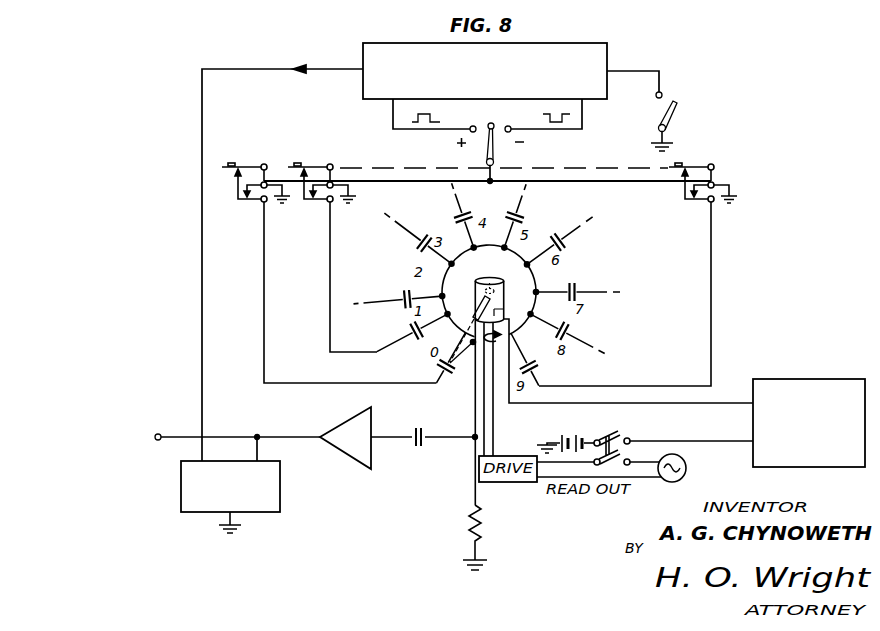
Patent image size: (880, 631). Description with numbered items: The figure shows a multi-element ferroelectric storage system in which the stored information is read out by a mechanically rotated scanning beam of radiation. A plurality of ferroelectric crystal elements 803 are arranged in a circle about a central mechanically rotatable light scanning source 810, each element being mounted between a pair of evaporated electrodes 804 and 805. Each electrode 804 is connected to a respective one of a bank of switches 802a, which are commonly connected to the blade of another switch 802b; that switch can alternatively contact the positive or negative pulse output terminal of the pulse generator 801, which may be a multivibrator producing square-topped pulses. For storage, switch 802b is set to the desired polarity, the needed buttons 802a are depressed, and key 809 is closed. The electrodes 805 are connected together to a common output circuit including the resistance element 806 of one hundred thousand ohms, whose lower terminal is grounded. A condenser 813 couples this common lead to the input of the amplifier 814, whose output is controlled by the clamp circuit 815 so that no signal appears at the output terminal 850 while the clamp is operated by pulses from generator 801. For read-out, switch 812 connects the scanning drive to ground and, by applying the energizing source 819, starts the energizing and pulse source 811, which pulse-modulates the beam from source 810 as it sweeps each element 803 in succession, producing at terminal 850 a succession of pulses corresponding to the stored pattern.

The pulse generator 801 is at (608, 52).
The bank of switches 802a is at (261, 160).
The switch 802b is at (495, 136).
The ferroelectric crystal element 803 is at (406, 296).
The evaporated electrode 804 is at (404, 288).
The evaporated electrode 805 is at (424, 299).
The resistance element 806 is at (468, 505).
The key 809 is at (671, 99).
The light scanning source 810 is at (500, 303).
The energizing and pulse source 811 is at (820, 378).
The switch 812 is at (620, 434).
The condenser 813 is at (419, 452).
The amplifier 814 is at (352, 462).
The clamp circuit 815 is at (181, 494).
The energizing source 819 is at (687, 465).
The output terminal 850 is at (160, 433).